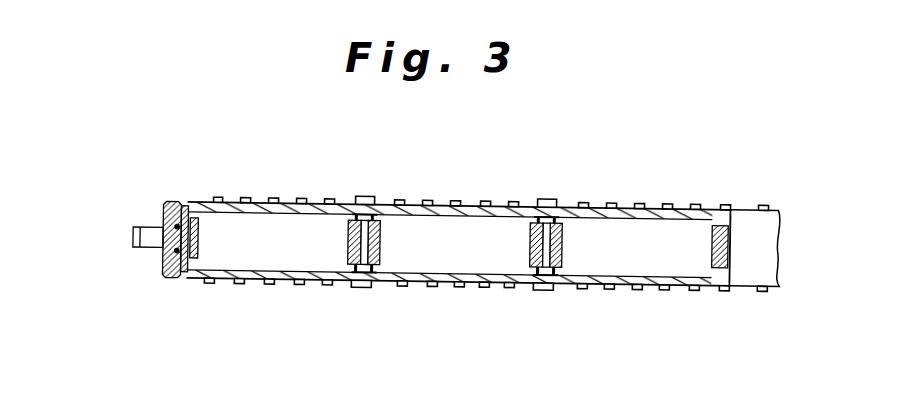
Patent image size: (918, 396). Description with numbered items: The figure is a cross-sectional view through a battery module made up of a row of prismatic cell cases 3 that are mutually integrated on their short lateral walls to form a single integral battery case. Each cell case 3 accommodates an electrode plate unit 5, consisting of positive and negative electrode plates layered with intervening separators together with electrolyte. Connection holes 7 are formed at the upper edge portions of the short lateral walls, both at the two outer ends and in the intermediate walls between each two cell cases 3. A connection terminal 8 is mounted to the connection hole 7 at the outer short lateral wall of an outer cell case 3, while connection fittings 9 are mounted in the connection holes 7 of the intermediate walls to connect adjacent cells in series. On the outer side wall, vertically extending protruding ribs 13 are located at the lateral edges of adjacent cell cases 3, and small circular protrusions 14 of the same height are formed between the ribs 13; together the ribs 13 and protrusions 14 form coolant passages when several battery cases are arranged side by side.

The cell case 3 is at (292, 206).
The electrode plate unit 5 is at (267, 248).
The connection hole 7 is at (198, 240).
The connection terminal 8 is at (133, 238).
The connection fitting 9 is at (350, 242).
The protruding rib 13 is at (375, 196).
The circular protrusion 14 is at (330, 200).